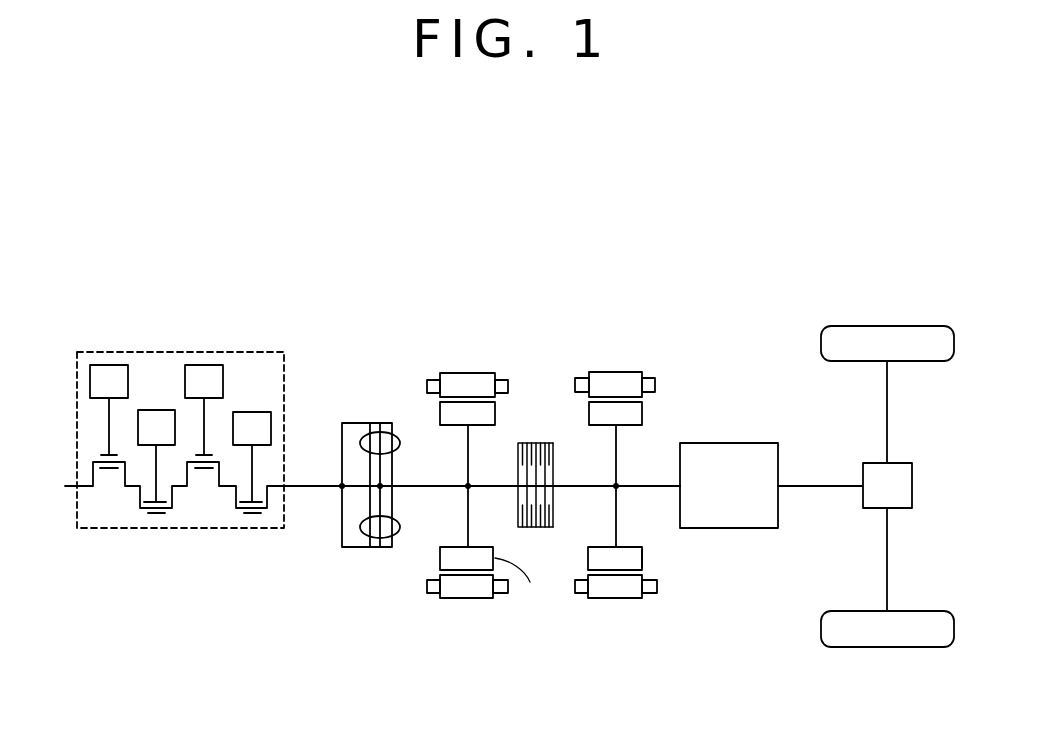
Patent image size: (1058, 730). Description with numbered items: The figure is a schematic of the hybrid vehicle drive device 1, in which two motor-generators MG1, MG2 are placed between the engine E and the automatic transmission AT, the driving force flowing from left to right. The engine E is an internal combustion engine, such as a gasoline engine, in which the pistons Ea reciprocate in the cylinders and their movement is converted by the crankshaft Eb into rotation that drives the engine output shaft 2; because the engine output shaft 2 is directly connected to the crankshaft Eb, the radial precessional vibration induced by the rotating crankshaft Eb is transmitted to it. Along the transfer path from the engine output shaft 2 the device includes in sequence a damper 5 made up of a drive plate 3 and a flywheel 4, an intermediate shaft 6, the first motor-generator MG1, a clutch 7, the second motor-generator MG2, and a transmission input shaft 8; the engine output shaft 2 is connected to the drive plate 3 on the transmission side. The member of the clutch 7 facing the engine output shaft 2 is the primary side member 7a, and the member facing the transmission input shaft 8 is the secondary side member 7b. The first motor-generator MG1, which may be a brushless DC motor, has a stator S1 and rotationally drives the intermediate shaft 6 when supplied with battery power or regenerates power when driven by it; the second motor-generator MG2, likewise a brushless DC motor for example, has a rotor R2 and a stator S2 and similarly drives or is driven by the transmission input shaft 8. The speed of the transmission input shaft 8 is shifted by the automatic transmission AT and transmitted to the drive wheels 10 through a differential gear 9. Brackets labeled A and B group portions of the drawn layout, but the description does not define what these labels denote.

The hybrid vehicle drive device 1 is at (340, 285).
The engine output shaft 2 is at (314, 486).
The drive plate 3 is at (339, 525).
The flywheel 4 is at (392, 451).
The damper 5 is at (385, 423).
The intermediate shaft 6 is at (447, 483).
The clutch 7 is at (540, 443).
The primary side member 7a is at (520, 493).
The secondary side member 7b is at (553, 503).
The transmission input shaft 8 is at (633, 486).
The differential gear 9 is at (901, 508).
The drive wheels 10 is at (887, 326).
The engine E is at (157, 350).
The pistons Ea is at (255, 413).
The crankshaft Eb is at (181, 488).
The first motor-generator MG1 is at (468, 370).
The second motor-generator MG2 is at (617, 370).
The stator S1 is at (467, 598).
The stator S2 is at (613, 598).
The rotor R2 is at (642, 557).
The power transmission unit A is at (658, 658).
The engaging unit B is at (398, 553).
The automatic transmission AT is at (729, 485).